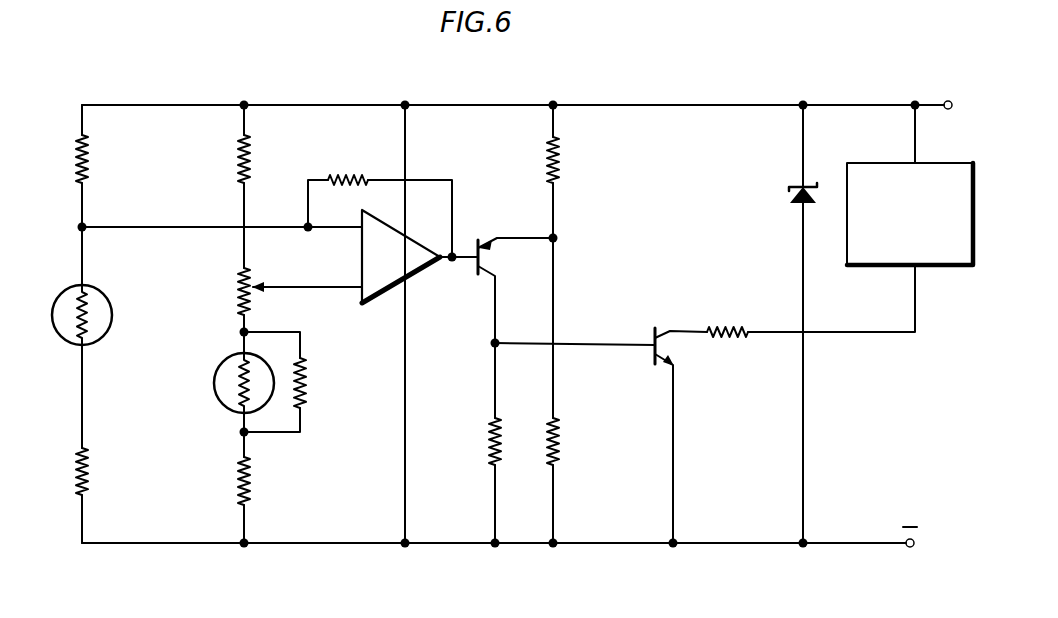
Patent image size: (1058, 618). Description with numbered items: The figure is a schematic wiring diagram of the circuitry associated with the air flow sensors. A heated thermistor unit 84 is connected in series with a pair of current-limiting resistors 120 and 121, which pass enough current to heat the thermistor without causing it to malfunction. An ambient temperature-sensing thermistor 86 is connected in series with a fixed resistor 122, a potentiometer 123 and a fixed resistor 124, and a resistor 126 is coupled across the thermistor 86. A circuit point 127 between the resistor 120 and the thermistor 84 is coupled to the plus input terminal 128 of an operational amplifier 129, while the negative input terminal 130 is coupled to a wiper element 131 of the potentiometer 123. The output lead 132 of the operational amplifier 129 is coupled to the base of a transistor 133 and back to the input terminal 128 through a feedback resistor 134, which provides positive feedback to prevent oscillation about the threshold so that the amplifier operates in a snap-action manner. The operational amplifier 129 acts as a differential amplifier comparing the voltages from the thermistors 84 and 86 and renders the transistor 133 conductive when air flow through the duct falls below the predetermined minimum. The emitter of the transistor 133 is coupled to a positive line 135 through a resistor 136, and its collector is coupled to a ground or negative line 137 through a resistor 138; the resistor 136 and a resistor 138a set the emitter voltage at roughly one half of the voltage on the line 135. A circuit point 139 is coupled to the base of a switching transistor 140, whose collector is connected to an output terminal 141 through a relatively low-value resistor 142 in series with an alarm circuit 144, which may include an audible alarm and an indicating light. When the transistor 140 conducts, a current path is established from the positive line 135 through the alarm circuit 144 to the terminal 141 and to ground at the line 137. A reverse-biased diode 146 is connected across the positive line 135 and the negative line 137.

The thermistor unit 84 is at (94, 345).
The ambient temperature-sensing thermistor 86 is at (214, 380).
The current-limiting resistor 120 is at (89, 160).
The current-limiting resistor 121 is at (89, 470).
The fixed resistor 122 is at (250, 152).
The potentiometer 123 is at (240, 298).
The fixed resistor 124 is at (251, 482).
The resistor 126 is at (307, 380).
The circuit point 127 is at (85, 226).
The plus input terminal 128 is at (334, 226).
The operational amplifier 129 is at (410, 255).
The negative input terminal 130 is at (346, 289).
The wiper element 131 is at (257, 285).
The output lead 132 is at (470, 247).
The transistor 133 is at (491, 270).
The feedback resistor 134 is at (346, 177).
The positive line 135 is at (610, 103).
The resistor 136 is at (559, 150).
The negative line 137 is at (570, 545).
The resistor 138 is at (488, 440).
The resistor 138a is at (559, 432).
The circuit point 139 is at (491, 346).
The switching transistor 140 is at (650, 350).
The output terminal 141 is at (912, 331).
The resistor 142 is at (726, 326).
The alarm circuit 144 is at (860, 167).
The diode 146 is at (790, 193).